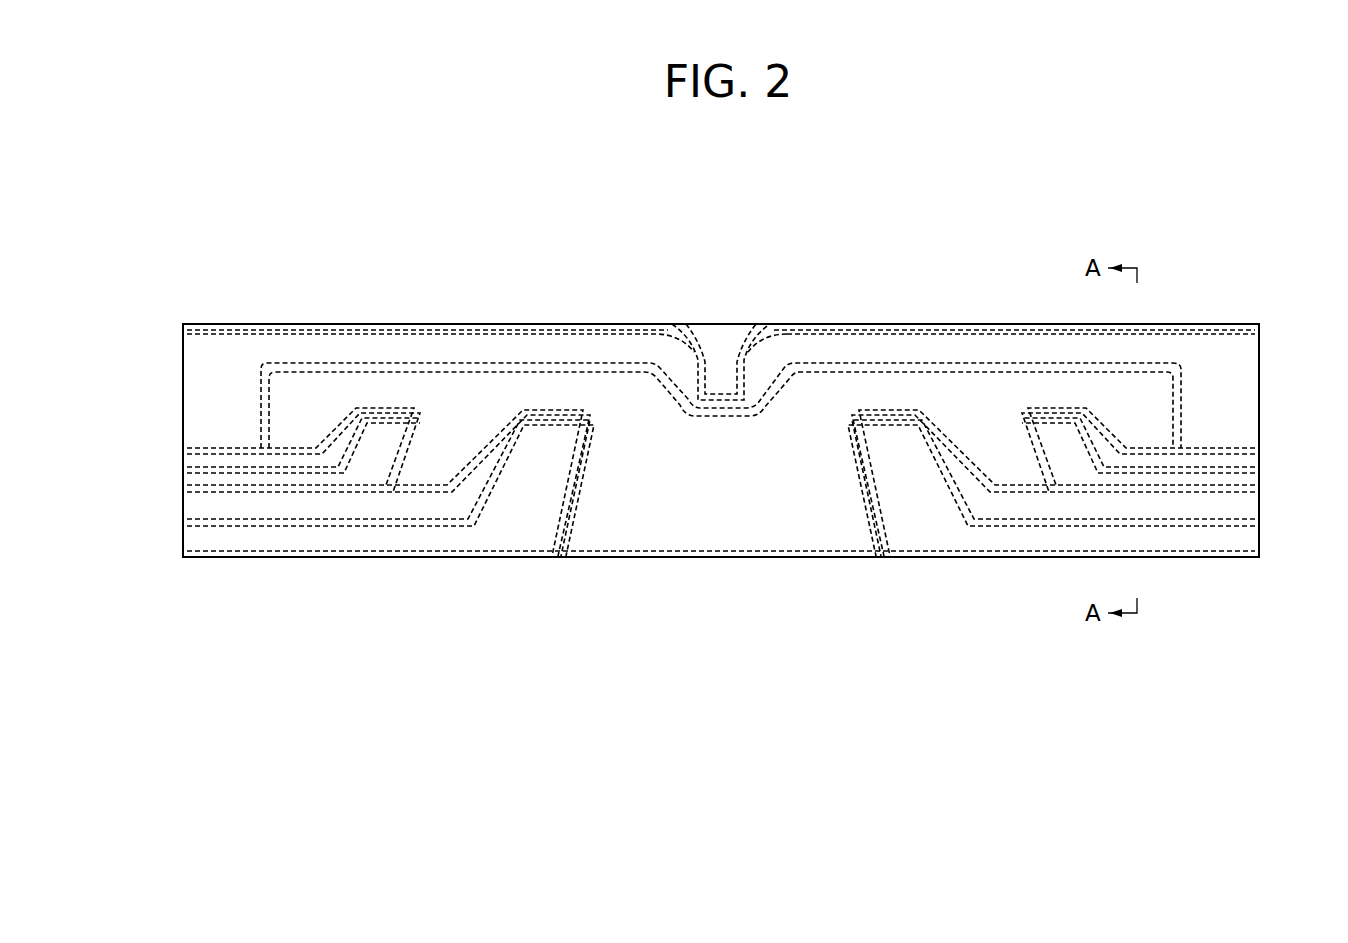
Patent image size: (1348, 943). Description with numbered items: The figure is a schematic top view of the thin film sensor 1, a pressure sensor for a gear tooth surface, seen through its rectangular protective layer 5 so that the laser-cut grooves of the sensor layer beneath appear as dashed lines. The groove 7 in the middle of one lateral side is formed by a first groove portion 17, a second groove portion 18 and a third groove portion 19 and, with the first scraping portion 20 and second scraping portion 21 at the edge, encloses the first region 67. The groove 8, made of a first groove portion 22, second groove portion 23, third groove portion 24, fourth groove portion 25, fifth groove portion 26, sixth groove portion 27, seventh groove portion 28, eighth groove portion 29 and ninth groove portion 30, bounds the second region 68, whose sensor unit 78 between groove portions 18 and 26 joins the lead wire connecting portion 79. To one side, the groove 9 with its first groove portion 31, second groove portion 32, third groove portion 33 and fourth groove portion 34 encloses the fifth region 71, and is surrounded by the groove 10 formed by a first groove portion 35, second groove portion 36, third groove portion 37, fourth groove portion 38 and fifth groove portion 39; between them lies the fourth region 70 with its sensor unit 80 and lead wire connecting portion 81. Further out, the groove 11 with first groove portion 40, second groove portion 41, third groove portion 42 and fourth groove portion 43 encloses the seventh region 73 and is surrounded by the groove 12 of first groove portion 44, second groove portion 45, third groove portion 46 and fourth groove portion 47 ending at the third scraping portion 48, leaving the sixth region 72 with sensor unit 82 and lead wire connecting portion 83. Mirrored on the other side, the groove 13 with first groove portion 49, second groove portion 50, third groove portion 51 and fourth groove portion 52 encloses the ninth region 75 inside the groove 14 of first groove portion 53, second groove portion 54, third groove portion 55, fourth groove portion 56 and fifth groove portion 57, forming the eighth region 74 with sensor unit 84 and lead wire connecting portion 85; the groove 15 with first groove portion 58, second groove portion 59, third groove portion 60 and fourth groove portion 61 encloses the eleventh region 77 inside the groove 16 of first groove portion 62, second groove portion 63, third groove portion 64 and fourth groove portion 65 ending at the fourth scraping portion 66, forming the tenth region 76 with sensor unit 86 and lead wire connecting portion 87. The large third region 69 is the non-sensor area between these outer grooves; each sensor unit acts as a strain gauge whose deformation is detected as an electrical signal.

The thin film sensor 1 is at (1277, 200).
The protective layer 5 is at (1262, 345).
The groove 7 is at (752, 312).
The groove 8 is at (883, 343).
The groove 9 is at (1225, 557).
The groove 10 is at (1052, 383).
The groove 11 is at (985, 545).
The groove 12 is at (852, 470).
The groove 13 is at (205, 528).
The groove 14 is at (390, 383).
The groove 15 is at (432, 548).
The groove 16 is at (578, 500).
The first groove portion 17 is at (760, 355).
The second groove portion 18 is at (690, 360).
The third groove portion 19 is at (668, 340).
The first scraping portion 20 is at (1181, 362).
The second scraping portion 21 is at (292, 363).
The first groove portion 22 is at (1225, 452).
The second groove portion 23 is at (1182, 400).
The third groove portion 24 is at (1160, 330).
The fourth groove portion 25 is at (846, 372).
The fifth groove portion 26 is at (748, 420).
The sixth groove portion 27 is at (598, 372).
The seventh groove portion 28 is at (512, 372).
The eighth groove portion 29 is at (255, 420).
The ninth groove portion 30 is at (230, 452).
The first groove portion 31 is at (1215, 490).
The second groove portion 32 is at (1262, 332).
The third groove portion 33 is at (1062, 540).
The fourth groove portion 34 is at (1157, 505).
The first groove portion 35 is at (1200, 448).
The second groove portion 36 is at (1232, 330).
The third groove portion 37 is at (970, 372).
The fourth groove portion 38 is at (944, 520).
The fifth groove portion 39 is at (1235, 551).
The first groove portion 40 is at (1206, 503).
The second groove portion 41 is at (905, 557).
The third groove portion 42 is at (880, 557).
The fourth groove portion 43 is at (925, 420).
The first groove portion 44 is at (1004, 540).
The second groove portion 45 is at (958, 447).
The third groove portion 46 is at (950, 440).
The fourth groove portion 47 is at (868, 428).
The third scraping portion 48 is at (1250, 557).
The first groove portion 49 is at (312, 497).
The second groove portion 50 is at (348, 475).
The third groove portion 51 is at (400, 470).
The fourth groove portion 52 is at (428, 418).
The first groove portion 53 is at (300, 448).
The second groove portion 54 is at (336, 430).
The third groove portion 55 is at (372, 408).
The fourth groove portion 56 is at (412, 445).
The fifth groove portion 57 is at (268, 500).
The first groove portion 58 is at (200, 549).
The second groove portion 59 is at (520, 500).
The third groove portion 60 is at (572, 470).
The fourth groove portion 61 is at (572, 455).
The first groove portion 62 is at (412, 440).
The second groove portion 63 is at (468, 470).
The third groove portion 64 is at (548, 408).
The fourth groove portion 65 is at (600, 425).
The fourth scraping portion 66 is at (305, 520).
The first region 67 is at (722, 328).
The second region 68 is at (215, 330).
The third region 69 is at (700, 425).
The fourth region 70 is at (1182, 557).
The fifth region 71 is at (970, 520).
The sixth region 72 is at (873, 500).
The seventh region 73 is at (890, 540).
The eighth region 74 is at (256, 450).
The ninth region 75 is at (388, 487).
The tenth region 76 is at (523, 548).
The eleventh region 77 is at (587, 482).
The sensor unit 78 is at (722, 402).
The lead wire connecting portion 79 is at (214, 336).
The sensor unit 80 is at (1120, 330).
The lead wire connecting portion 81 is at (1220, 472).
The sensor unit 82 is at (858, 412).
The lead wire connecting portion 83 is at (1225, 527).
The sensor unit 84 is at (412, 406).
The lead wire connecting portion 85 is at (233, 484).
The sensor unit 86 is at (588, 410).
The lead wire connecting portion 87 is at (490, 505).